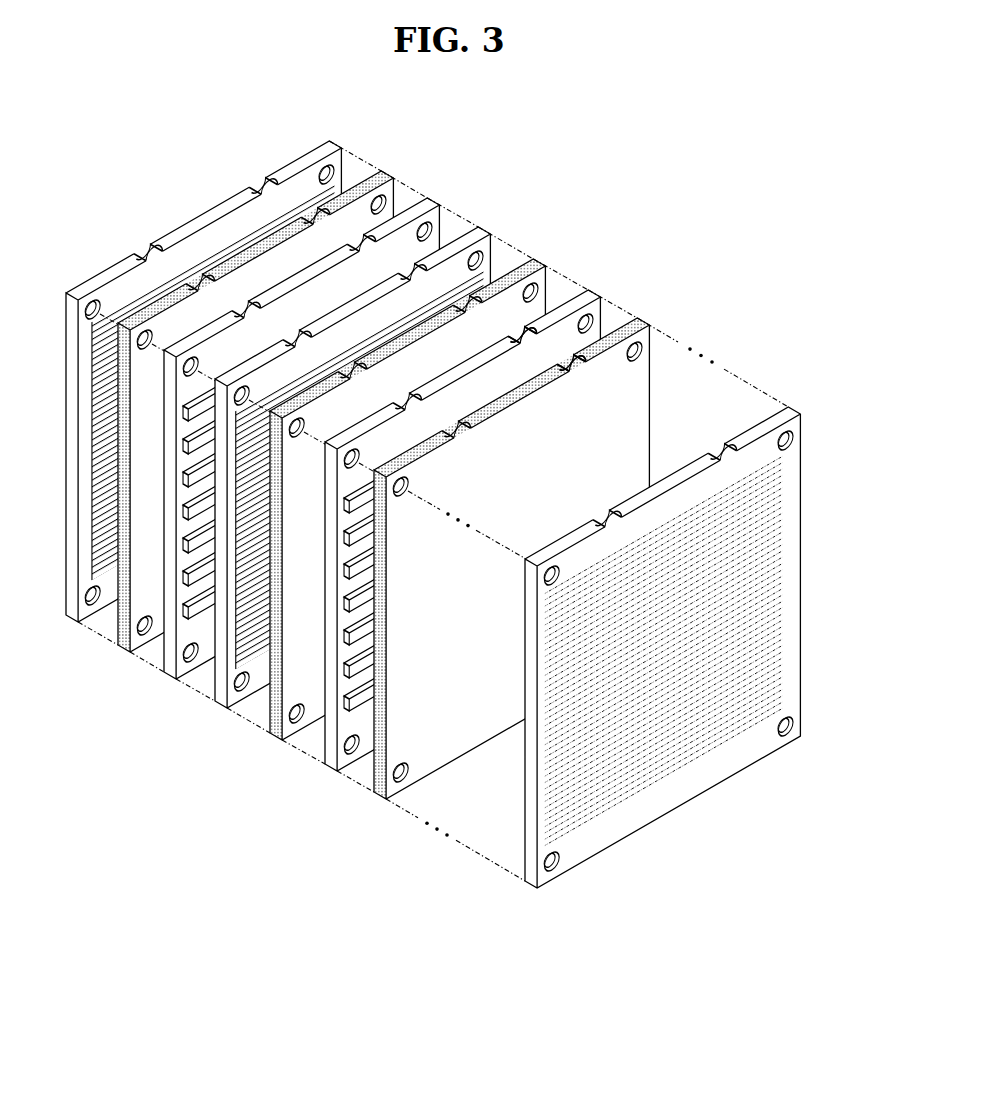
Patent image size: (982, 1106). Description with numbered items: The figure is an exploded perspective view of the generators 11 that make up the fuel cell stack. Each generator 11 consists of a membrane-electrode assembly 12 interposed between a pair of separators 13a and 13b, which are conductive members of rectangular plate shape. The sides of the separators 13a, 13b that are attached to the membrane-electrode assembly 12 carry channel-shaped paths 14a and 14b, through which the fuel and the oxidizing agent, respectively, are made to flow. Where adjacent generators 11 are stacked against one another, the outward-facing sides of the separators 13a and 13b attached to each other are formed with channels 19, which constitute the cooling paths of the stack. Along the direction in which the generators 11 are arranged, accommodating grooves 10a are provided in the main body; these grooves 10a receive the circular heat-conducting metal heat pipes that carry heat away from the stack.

The accommodating groove 10a is at (543, 341).
The generator 11 is at (371, 530).
The membrane-electrode assembly 12 is at (270, 731).
The separator 13a is at (316, 507).
The separator 13b is at (328, 752).
The channel-shaped path 14a is at (237, 666).
The channel-shaped path 14b is at (595, 802).
The channel 19 is at (164, 620).